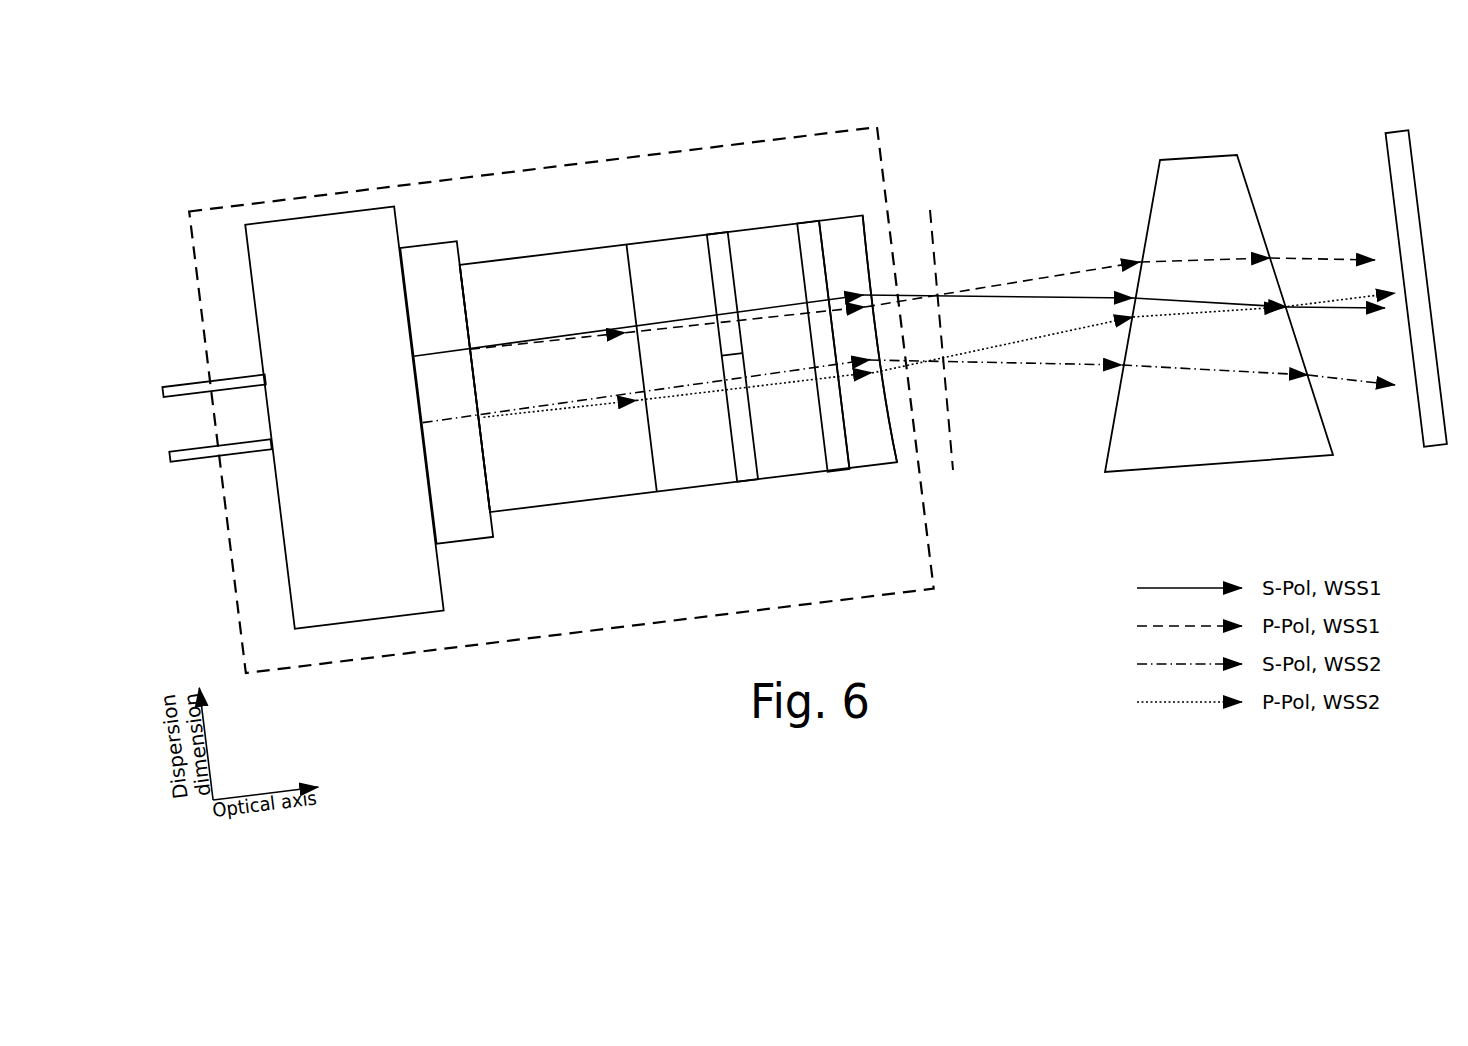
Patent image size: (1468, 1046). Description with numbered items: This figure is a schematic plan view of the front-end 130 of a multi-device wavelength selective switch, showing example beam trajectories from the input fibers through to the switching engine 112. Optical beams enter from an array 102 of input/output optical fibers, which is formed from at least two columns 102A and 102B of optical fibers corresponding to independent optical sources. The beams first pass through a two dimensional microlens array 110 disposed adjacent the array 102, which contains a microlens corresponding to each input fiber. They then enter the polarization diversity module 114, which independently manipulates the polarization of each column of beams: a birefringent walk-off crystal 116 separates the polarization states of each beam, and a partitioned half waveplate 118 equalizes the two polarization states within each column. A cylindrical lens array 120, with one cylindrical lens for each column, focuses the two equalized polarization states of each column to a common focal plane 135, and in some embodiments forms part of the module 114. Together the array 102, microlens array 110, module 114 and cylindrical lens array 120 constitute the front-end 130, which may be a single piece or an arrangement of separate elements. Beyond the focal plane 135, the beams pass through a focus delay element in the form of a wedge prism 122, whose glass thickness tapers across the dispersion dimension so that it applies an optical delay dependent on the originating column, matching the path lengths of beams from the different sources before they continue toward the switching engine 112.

The array of input/output optical fibers 102 is at (262, 222).
The first column of optical fibers 102A is at (190, 385).
The second column of optical fibers 102B is at (190, 450).
The two dimensional microlens array 110 is at (430, 243).
The polarization diversity module 114 is at (677, 492).
The birefringent walk-off crystal 116 is at (577, 293).
The partitioned half waveplate 118 is at (717, 250).
The cylindrical lens array 120 is at (853, 235).
The wedge prism 122 is at (1187, 165).
The switching engine 112 is at (1398, 132).
The front-end 130 is at (528, 170).
The common focal plane 135 is at (930, 205).